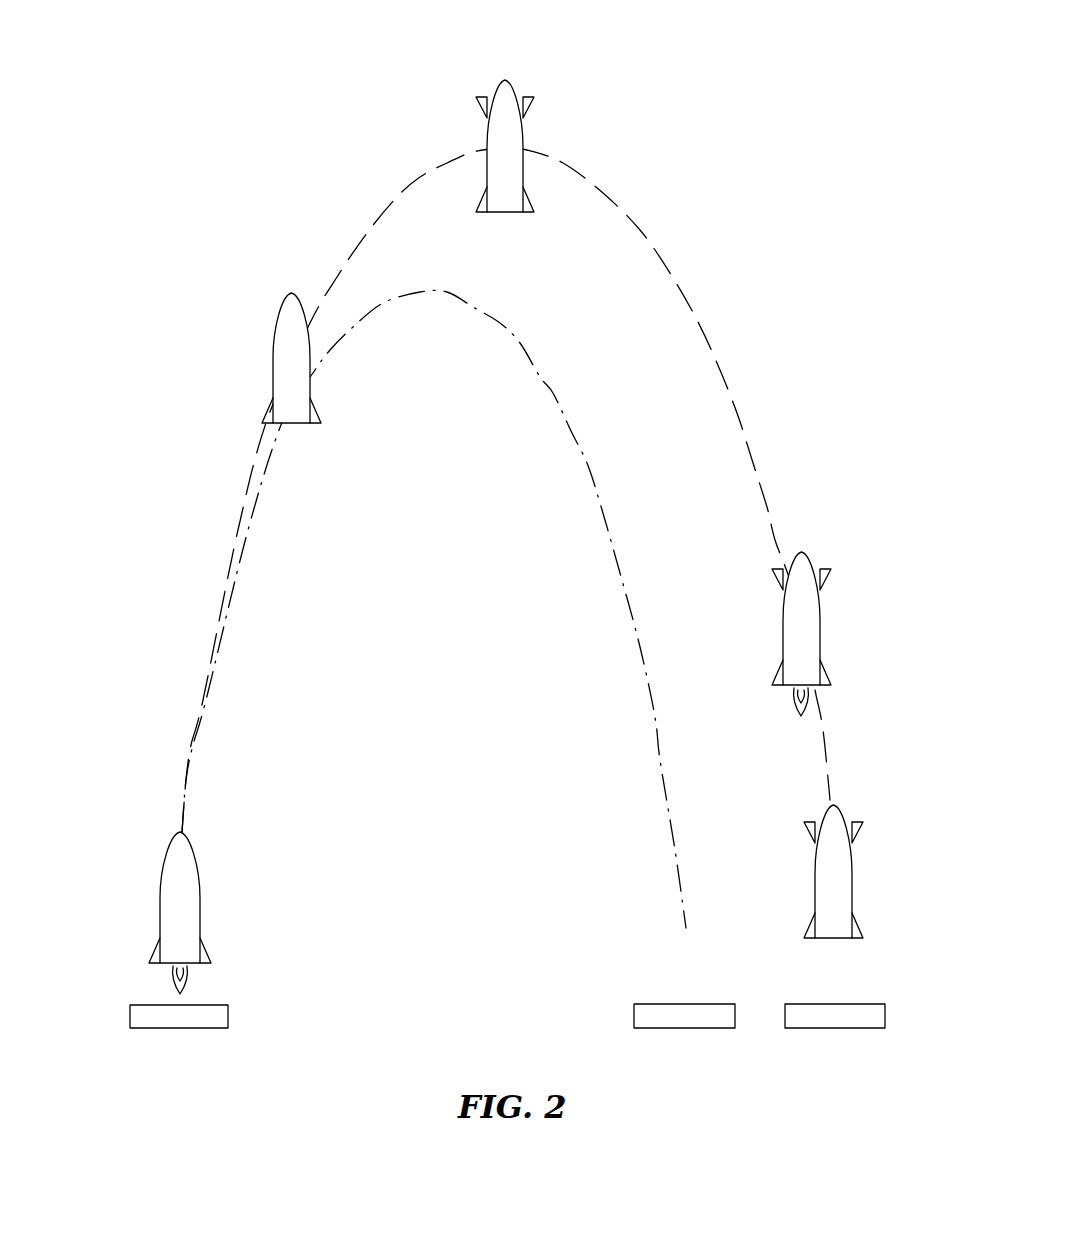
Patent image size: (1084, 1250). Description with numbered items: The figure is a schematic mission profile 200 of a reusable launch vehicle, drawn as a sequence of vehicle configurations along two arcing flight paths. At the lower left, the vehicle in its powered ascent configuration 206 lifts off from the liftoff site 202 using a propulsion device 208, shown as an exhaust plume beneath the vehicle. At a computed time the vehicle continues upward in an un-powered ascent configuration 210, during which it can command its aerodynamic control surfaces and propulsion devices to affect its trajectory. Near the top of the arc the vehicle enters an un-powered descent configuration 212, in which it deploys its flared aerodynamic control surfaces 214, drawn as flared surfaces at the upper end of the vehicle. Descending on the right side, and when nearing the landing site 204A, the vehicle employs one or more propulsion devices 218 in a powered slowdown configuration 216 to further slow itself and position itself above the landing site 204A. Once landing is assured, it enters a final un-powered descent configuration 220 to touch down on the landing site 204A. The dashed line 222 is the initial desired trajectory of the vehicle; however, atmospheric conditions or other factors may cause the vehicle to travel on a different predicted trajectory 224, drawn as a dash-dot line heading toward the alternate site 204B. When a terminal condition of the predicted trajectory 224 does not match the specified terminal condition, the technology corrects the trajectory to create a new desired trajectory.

The mission profile 200 is at (733, 100).
The liftoff site 202 is at (179, 1029).
The landing site 204A is at (835, 1028).
The site 204B is at (684, 1028).
The powered ascent configuration 206 is at (168, 855).
The propulsion device 208 is at (164, 966).
The un-powered ascent configuration 210 is at (278, 322).
The un-powered descent configuration 212 is at (505, 80).
The deployable flared aerodynamic control surfaces 214 is at (483, 112).
The powered slowdown configuration 216 is at (803, 552).
The propulsion devices 218 is at (814, 690).
The un-powered descent configuration 220 is at (833, 805).
The initial desired trajectory 222 is at (240, 505).
The predicted trajectory 224 is at (640, 650).